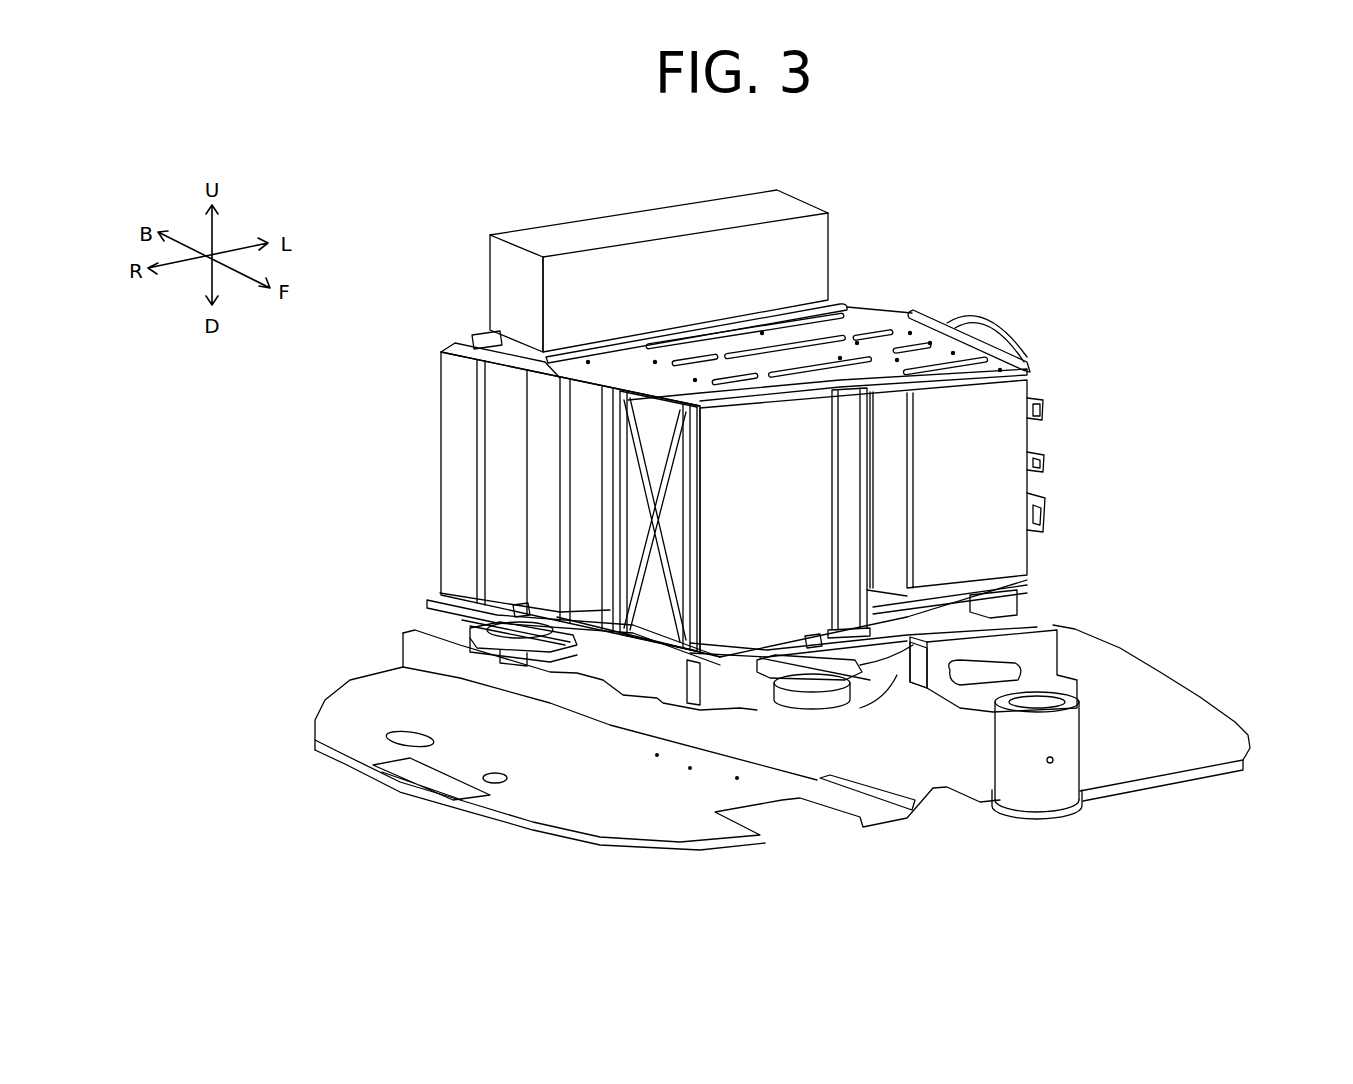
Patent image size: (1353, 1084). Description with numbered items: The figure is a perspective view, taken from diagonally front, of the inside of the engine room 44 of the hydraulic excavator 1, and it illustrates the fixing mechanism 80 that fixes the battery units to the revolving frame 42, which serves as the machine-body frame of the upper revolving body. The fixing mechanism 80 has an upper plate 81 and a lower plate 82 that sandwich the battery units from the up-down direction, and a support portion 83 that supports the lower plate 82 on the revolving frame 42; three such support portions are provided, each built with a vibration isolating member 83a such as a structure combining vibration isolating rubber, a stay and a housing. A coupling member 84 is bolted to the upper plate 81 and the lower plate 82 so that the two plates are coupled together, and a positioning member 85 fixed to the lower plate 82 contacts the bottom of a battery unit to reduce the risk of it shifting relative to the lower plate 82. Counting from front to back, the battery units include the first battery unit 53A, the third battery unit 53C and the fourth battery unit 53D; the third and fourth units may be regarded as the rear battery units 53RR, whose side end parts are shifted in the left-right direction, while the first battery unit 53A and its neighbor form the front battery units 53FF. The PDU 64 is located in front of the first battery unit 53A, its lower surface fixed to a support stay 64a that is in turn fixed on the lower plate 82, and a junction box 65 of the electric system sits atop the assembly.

The hydraulic excavator 1 is at (1270, 229).
The engine room 44 is at (1126, 293).
The junction box 65 is at (661, 220).
The fixing mechanism 80 is at (930, 290).
The upper plate 81 is at (947, 343).
The coupling member 84 is at (862, 480).
The PDU (Power Drive Unit) 64 is at (995, 519).
The support stay 64a is at (1025, 592).
The lower plate 82 is at (774, 678).
The positioning member 85 is at (547, 613).
The support portion 83 is at (498, 642).
The vibration isolating member 83a is at (517, 635).
The revolving frame 42 is at (1130, 688).
The fourth battery unit 53D is at (447, 506).
The third battery unit 53C is at (598, 581).
The first battery unit 53A is at (791, 560).
The rear battery units 53RR is at (570, 379).
The front battery units 53FF is at (967, 598).